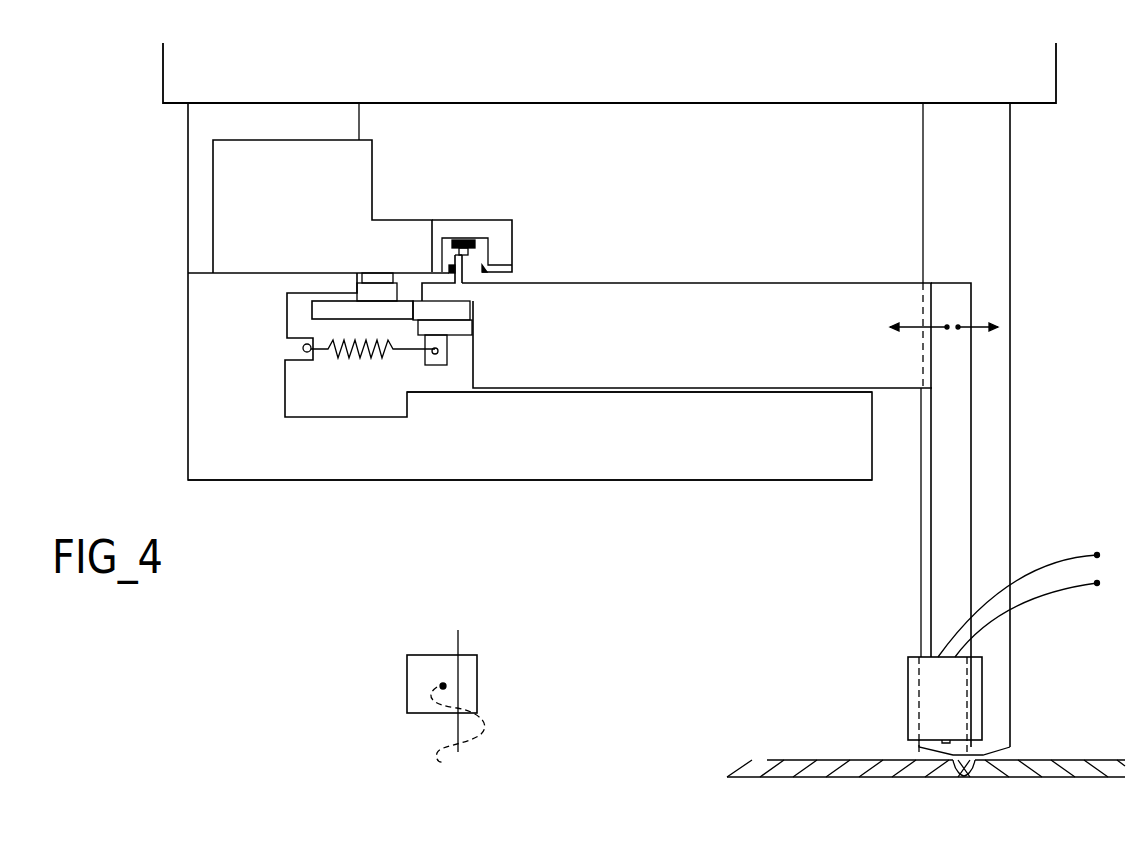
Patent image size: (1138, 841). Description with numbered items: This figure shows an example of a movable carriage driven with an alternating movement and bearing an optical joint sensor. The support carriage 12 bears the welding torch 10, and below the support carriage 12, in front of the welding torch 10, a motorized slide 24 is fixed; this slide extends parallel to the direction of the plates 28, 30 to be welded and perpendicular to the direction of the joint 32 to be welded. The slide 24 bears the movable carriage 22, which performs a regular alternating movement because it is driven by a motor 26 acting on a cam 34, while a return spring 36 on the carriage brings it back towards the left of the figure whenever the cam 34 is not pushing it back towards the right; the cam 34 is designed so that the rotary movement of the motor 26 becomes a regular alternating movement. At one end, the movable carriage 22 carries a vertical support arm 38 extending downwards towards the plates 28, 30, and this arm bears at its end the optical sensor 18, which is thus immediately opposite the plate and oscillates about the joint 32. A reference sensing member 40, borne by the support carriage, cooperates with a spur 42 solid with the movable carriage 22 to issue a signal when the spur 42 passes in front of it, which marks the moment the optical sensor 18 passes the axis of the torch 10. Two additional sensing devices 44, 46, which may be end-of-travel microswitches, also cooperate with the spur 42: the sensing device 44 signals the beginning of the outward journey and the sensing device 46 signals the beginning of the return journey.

The welding torch 10 is at (995, 447).
The support carriage 12 is at (178, 71).
The optical sensor 18 is at (975, 692).
The movable carriage 22 is at (597, 297).
The motorized slide 24 is at (445, 415).
The motor 26 is at (355, 190).
The plate 28 is at (823, 767).
The plate 30 is at (1068, 768).
The joint 32 is at (970, 770).
The cam 34 is at (323, 308).
The return spring 36 is at (350, 357).
The vertical support arm 38 is at (957, 407).
The reference sensing member 40 is at (473, 241).
The spur 42 is at (466, 265).
The sensing device 44 is at (449, 266).
The sensing device 46 is at (488, 254).